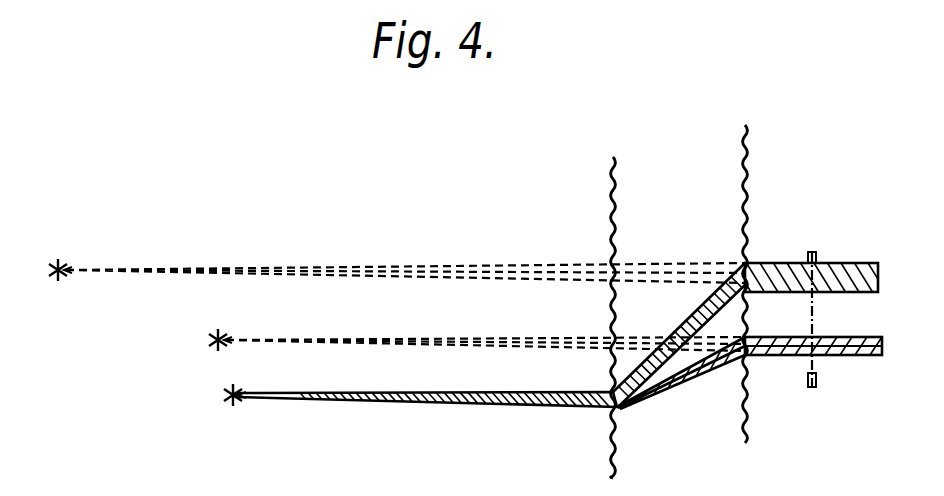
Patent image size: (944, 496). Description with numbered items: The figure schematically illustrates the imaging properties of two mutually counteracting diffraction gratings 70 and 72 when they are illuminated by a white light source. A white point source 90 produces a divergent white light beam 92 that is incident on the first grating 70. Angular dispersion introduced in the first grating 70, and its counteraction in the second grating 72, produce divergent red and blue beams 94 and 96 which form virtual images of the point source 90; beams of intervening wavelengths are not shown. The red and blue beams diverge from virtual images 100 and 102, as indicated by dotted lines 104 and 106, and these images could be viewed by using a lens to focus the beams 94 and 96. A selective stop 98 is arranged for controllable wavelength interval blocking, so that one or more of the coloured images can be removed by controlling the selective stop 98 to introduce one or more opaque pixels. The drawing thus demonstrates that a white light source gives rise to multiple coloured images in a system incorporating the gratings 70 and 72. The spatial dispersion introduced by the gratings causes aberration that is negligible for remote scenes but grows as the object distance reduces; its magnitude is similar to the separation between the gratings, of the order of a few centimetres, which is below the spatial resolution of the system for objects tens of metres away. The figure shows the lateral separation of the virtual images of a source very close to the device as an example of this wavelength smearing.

The first grating 70 is at (614, 468).
The second grating 72 is at (740, 442).
The point source 90 is at (228, 396).
The white light beam 92 is at (508, 408).
The red beam 94 is at (862, 345).
The blue beam 96 is at (867, 262).
The selective stop 98 is at (812, 387).
The virtual image 100 is at (67, 266).
The virtual image 102 is at (214, 340).
The dotted lines 104 is at (351, 264).
The dotted lines 106 is at (377, 339).